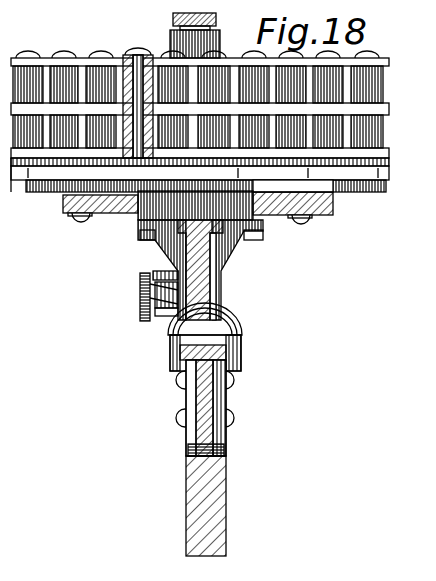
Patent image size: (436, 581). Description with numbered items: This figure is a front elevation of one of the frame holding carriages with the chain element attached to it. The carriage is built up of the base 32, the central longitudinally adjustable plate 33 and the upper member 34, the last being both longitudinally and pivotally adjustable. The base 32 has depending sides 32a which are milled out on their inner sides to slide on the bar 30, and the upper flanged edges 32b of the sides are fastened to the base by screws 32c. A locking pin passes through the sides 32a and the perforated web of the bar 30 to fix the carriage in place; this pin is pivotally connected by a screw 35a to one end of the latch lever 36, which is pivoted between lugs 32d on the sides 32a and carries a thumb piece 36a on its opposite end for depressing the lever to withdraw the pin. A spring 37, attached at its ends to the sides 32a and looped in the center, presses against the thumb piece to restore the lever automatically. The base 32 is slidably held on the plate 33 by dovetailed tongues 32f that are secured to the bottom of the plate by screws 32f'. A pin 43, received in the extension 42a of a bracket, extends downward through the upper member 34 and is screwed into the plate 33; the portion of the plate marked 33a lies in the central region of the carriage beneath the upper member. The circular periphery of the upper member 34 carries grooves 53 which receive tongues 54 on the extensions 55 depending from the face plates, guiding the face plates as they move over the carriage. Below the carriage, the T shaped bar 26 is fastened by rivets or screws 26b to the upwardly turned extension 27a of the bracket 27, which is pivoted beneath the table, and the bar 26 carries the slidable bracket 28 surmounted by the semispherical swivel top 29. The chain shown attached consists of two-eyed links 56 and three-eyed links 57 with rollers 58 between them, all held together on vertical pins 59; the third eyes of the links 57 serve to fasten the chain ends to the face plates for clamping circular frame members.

The T shaped bar 26 is at (217, 353).
The rivets or screws 26b is at (226, 374).
The bracket 27 is at (200, 473).
The upwardly turned extension 27a is at (216, 432).
The slidable bracket 28 is at (233, 333).
The swivel top 29 is at (226, 315).
The bar 30 is at (203, 282).
The base 32 is at (126, 208).
The depending side 32a is at (214, 295).
The upper flanged edge 32b is at (150, 221).
The screw 32c is at (135, 233).
The lug 32d is at (160, 310).
The dovetailed tongue 32f is at (174, 229).
The screw 32f' is at (177, 242).
The central longitudinally adjustable plate 33 is at (293, 186).
The plate hub 33a is at (195, 205).
The upper member 34 is at (193, 172).
The screw 35a is at (160, 264).
The latch lever 36 is at (136, 300).
The thumb piece 36a is at (141, 278).
The spring 37 is at (146, 289).
The extension 42a is at (212, 32).
The pin 43 is at (206, 14).
The groove 53 is at (356, 190).
The tongue 54 is at (38, 172).
The extension 55 is at (44, 158).
The link 56 is at (78, 50).
The link 57 is at (130, 46).
The roller 58 is at (93, 70).
The vertical pin 59 is at (42, 50).